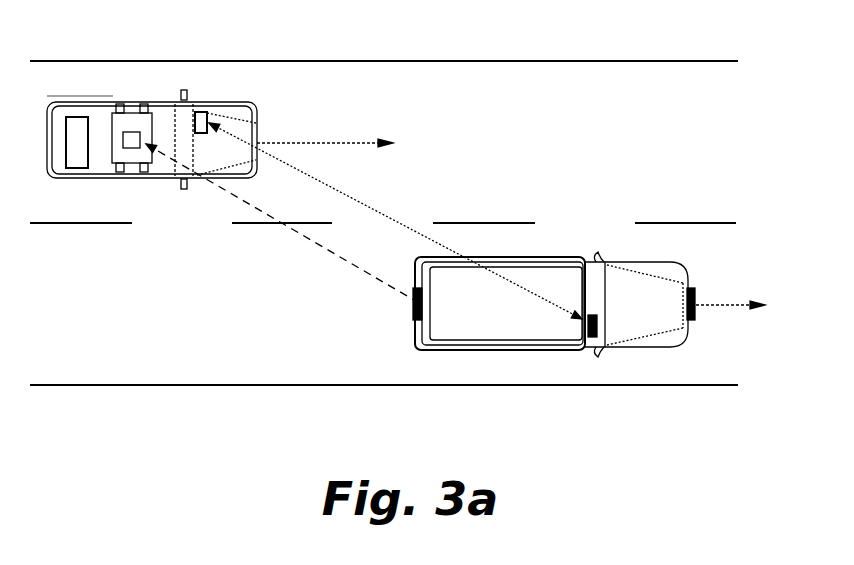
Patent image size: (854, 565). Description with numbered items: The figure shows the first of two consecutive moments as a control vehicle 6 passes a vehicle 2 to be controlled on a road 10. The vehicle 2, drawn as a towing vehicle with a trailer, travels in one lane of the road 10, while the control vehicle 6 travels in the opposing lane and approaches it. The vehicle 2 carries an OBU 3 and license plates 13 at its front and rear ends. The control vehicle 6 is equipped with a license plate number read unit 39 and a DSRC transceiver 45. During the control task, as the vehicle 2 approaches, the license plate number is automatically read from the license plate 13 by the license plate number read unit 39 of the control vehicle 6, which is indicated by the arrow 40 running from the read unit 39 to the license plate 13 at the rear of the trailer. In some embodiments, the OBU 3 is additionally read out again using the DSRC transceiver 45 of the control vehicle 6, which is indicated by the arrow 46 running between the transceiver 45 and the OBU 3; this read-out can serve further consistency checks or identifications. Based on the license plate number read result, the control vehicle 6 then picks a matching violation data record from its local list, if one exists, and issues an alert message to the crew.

The vehicle 2 is at (530, 341).
The OBU 3 is at (598, 338).
The control vehicle 6 is at (92, 102).
The road 10 is at (100, 387).
The license plate 13 is at (410, 312).
The license plate number read unit 39 is at (130, 135).
The arrow 40 is at (333, 255).
The DSRC transceiver 45 is at (201, 114).
The arrow 46 is at (373, 210).